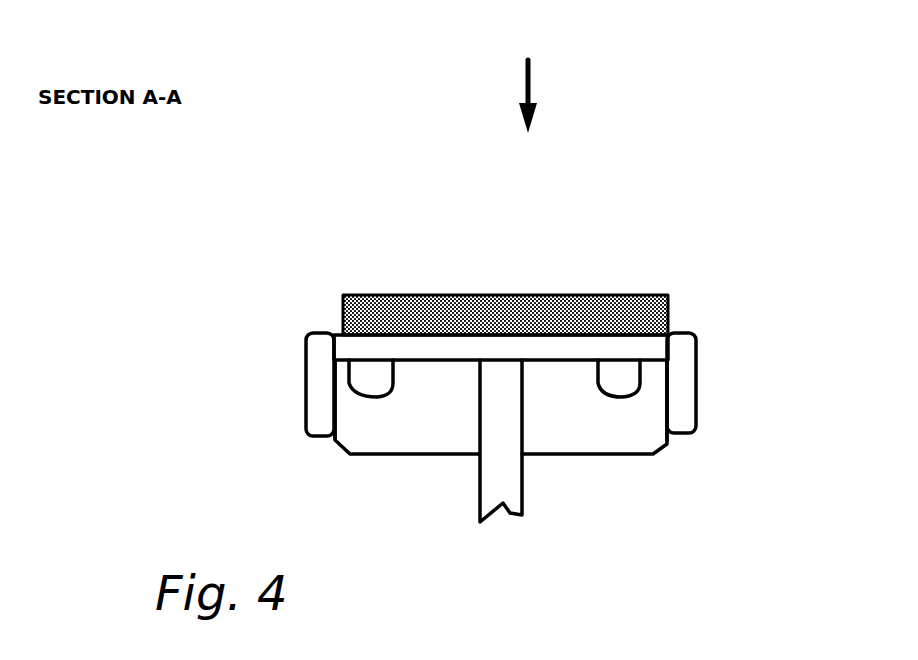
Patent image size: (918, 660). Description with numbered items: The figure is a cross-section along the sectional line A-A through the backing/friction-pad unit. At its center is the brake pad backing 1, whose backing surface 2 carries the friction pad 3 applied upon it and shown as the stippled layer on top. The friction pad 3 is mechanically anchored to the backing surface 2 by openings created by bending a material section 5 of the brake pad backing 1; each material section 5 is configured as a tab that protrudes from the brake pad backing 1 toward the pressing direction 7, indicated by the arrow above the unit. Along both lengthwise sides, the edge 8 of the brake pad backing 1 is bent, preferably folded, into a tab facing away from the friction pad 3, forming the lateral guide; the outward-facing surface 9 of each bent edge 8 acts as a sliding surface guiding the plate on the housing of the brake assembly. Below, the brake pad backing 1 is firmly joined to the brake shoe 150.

The brake pad backing 1 is at (482, 296).
The backing surface 2 is at (662, 297).
The friction pad 3 is at (573, 293).
The material section 5 is at (373, 383).
The pressing direction 7 is at (535, 86).
The bent edge 8 is at (307, 360).
The sliding surface 9 is at (305, 397).
The brake shoe 150 is at (523, 483).